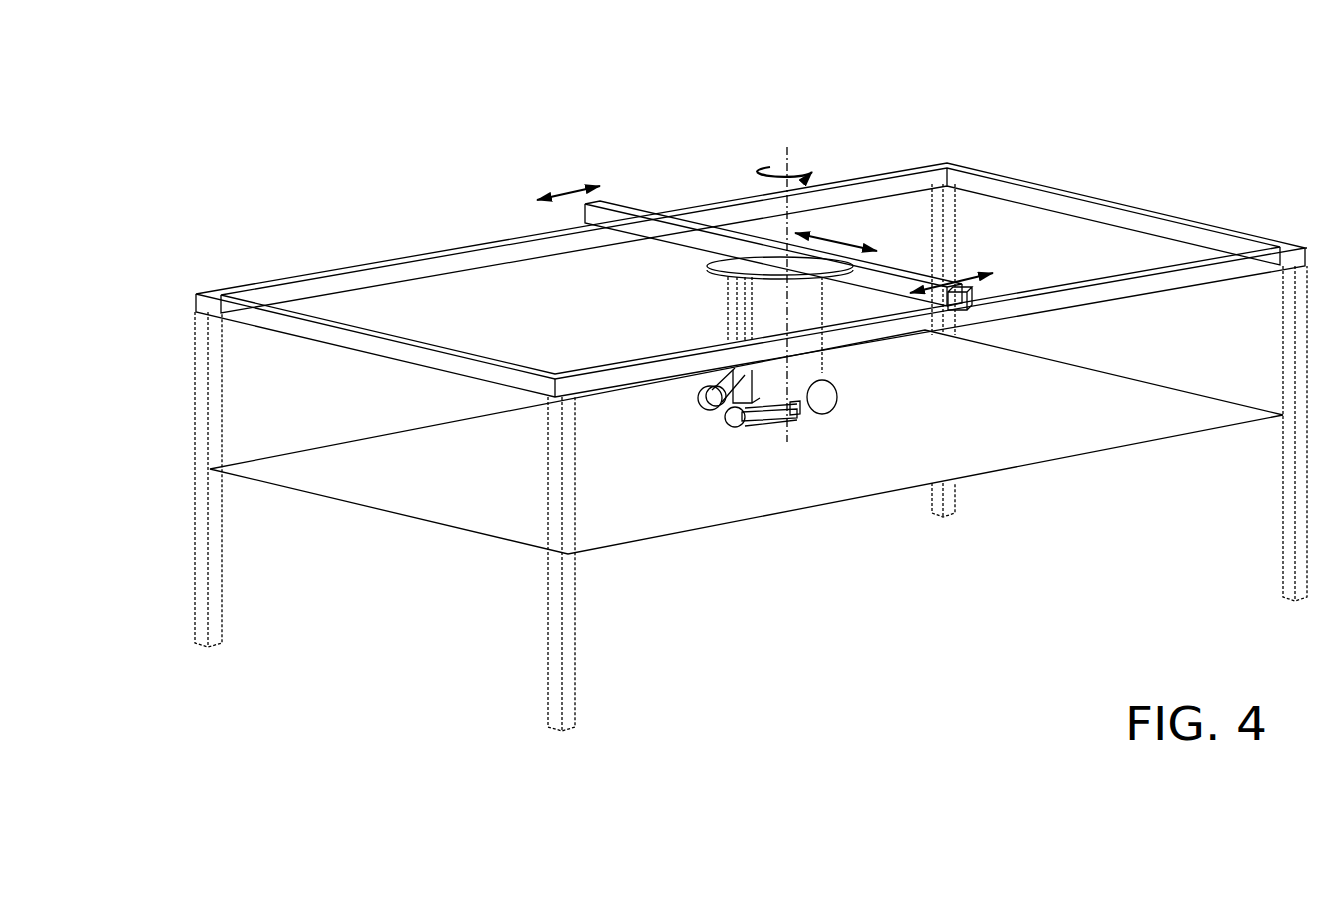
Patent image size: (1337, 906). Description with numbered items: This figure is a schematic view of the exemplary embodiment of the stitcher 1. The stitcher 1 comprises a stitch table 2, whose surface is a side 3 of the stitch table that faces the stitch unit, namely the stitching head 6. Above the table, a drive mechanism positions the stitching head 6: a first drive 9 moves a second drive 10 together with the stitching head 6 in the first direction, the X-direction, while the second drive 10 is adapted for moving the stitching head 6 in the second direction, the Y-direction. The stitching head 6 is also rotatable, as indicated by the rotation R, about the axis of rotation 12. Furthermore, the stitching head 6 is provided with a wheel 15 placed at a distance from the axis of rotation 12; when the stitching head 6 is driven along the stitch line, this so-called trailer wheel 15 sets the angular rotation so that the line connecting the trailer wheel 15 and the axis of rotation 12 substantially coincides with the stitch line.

The stitcher 1 is at (1065, 127).
The stitch table 2 is at (820, 505).
The side of the stitch table 3 is at (1151, 428).
The stitching head 6 is at (817, 370).
The first drive 9 is at (423, 263).
The second drive 10 is at (630, 227).
The axis of rotation 12 is at (788, 436).
The wheel 15 is at (723, 418).